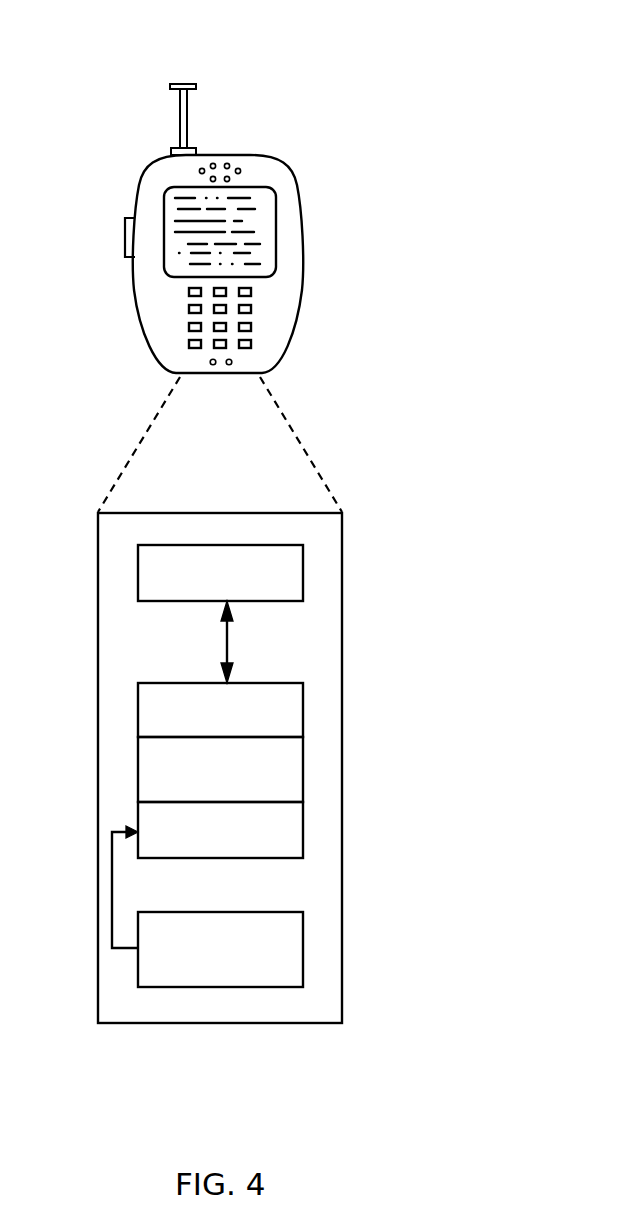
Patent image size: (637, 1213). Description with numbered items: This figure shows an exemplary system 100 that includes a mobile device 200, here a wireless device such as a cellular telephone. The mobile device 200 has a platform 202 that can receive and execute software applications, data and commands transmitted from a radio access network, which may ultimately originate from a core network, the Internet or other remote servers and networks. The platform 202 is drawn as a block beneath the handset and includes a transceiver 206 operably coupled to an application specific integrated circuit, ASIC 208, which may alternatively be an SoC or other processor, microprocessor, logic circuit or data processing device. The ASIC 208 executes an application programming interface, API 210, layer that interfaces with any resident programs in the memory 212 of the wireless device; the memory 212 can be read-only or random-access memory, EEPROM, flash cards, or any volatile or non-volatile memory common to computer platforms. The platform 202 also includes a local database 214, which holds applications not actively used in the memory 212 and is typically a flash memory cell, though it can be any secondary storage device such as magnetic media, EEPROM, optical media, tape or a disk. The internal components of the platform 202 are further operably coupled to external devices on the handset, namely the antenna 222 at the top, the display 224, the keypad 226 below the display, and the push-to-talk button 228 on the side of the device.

The system 100 is at (490, 79).
The mobile device 200 is at (283, 352).
The platform 202 is at (98, 615).
The transceiver 206 is at (303, 568).
The ASIC 208 is at (303, 708).
The API 210 is at (303, 767).
The memory 212 is at (303, 829).
The local database 214 is at (303, 946).
The antenna 222 is at (187, 105).
The display 224 is at (277, 232).
The keypad 226 is at (252, 309).
The push-to-talk button 228 is at (125, 240).